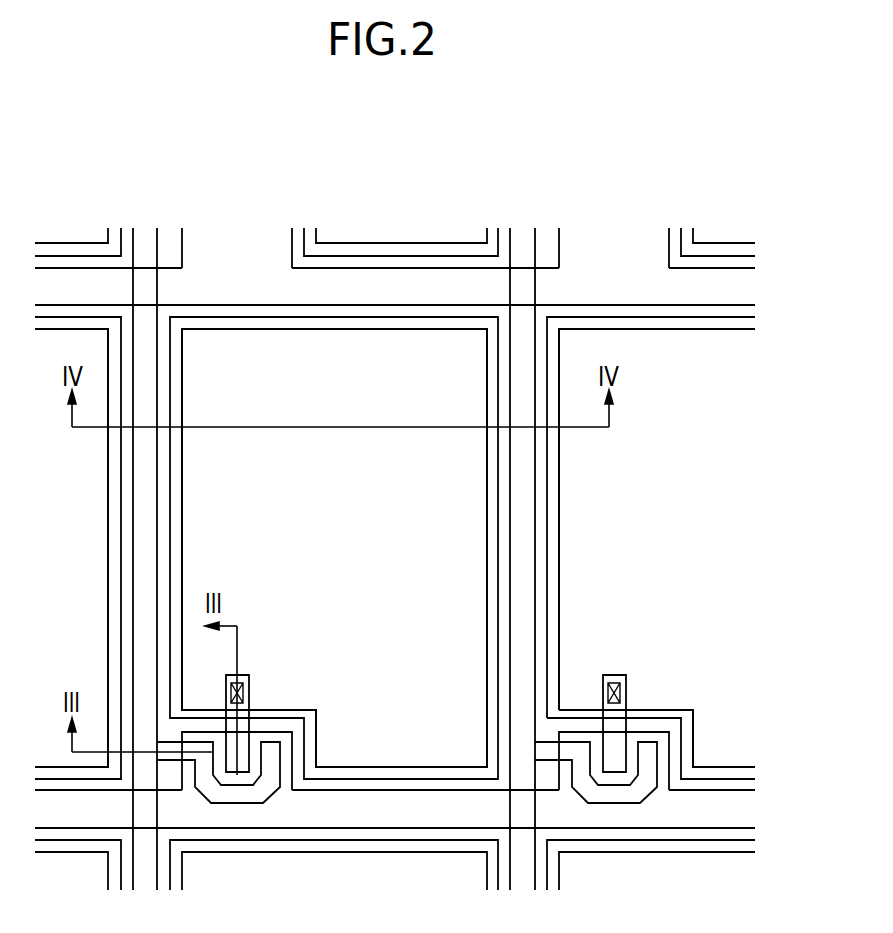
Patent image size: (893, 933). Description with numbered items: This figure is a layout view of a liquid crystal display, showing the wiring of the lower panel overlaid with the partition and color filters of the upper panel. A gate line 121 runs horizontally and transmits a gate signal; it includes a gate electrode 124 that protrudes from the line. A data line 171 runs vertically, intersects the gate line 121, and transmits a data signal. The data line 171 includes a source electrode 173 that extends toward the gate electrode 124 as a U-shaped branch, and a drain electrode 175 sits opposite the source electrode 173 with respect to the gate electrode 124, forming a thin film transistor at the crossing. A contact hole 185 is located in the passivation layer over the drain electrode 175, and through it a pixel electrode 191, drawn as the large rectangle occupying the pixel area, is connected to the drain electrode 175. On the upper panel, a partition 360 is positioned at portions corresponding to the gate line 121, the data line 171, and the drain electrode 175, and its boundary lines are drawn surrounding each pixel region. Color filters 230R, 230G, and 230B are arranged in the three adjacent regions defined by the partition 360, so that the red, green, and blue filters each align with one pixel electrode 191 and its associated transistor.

The gate line 121 is at (350, 828).
The gate electrode 124 is at (292, 760).
The data line 171 is at (133, 482).
The source electrode 173 is at (237, 803).
The drain electrode 175 is at (249, 700).
The contact hole 185 is at (246, 700).
The pixel electrode 191 is at (170, 385).
The partition 360 is at (182, 567).
The red color filter 230R is at (80, 492).
The green color filter 230G is at (362, 492).
The blue color filter 230B is at (682, 492).